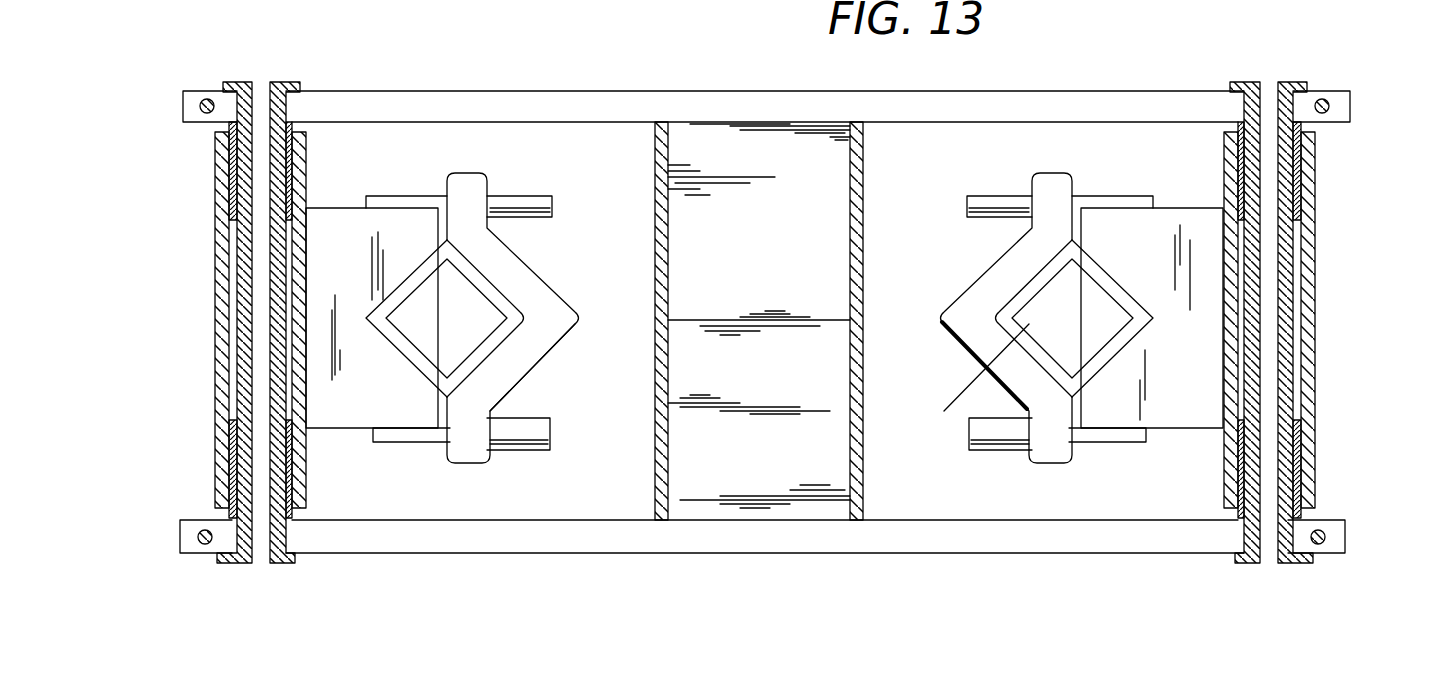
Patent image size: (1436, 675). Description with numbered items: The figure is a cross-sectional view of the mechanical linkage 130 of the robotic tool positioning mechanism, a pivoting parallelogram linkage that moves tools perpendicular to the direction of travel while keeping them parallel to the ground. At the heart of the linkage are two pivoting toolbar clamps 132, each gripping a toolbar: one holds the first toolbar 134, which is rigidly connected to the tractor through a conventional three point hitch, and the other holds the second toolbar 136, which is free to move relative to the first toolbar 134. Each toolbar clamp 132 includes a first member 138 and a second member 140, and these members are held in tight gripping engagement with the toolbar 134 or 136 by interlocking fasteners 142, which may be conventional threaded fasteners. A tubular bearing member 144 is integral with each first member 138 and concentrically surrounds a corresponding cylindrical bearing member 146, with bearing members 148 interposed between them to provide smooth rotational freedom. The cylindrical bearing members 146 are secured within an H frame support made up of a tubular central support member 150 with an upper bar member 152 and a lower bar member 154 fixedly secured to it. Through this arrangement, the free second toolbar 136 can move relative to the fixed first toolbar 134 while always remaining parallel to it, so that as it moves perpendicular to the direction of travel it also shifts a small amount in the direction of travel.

The mechanical linkage 130 is at (495, 63).
The pivoting toolbar clamp 132 is at (572, 291).
The first toolbar 134 is at (490, 352).
The second toolbar 136 is at (1015, 335).
The first member 138 is at (332, 223).
The second member 140 is at (502, 392).
The interlocking fasteners 142 is at (521, 194).
The tubular bearing member 144 is at (217, 343).
The cylindrical bearing member 146 is at (237, 93).
The bearing members 148 is at (292, 152).
The tubular central support member 150 is at (668, 285).
The upper bar member 152 is at (713, 97).
The lower bar member 154 is at (548, 543).